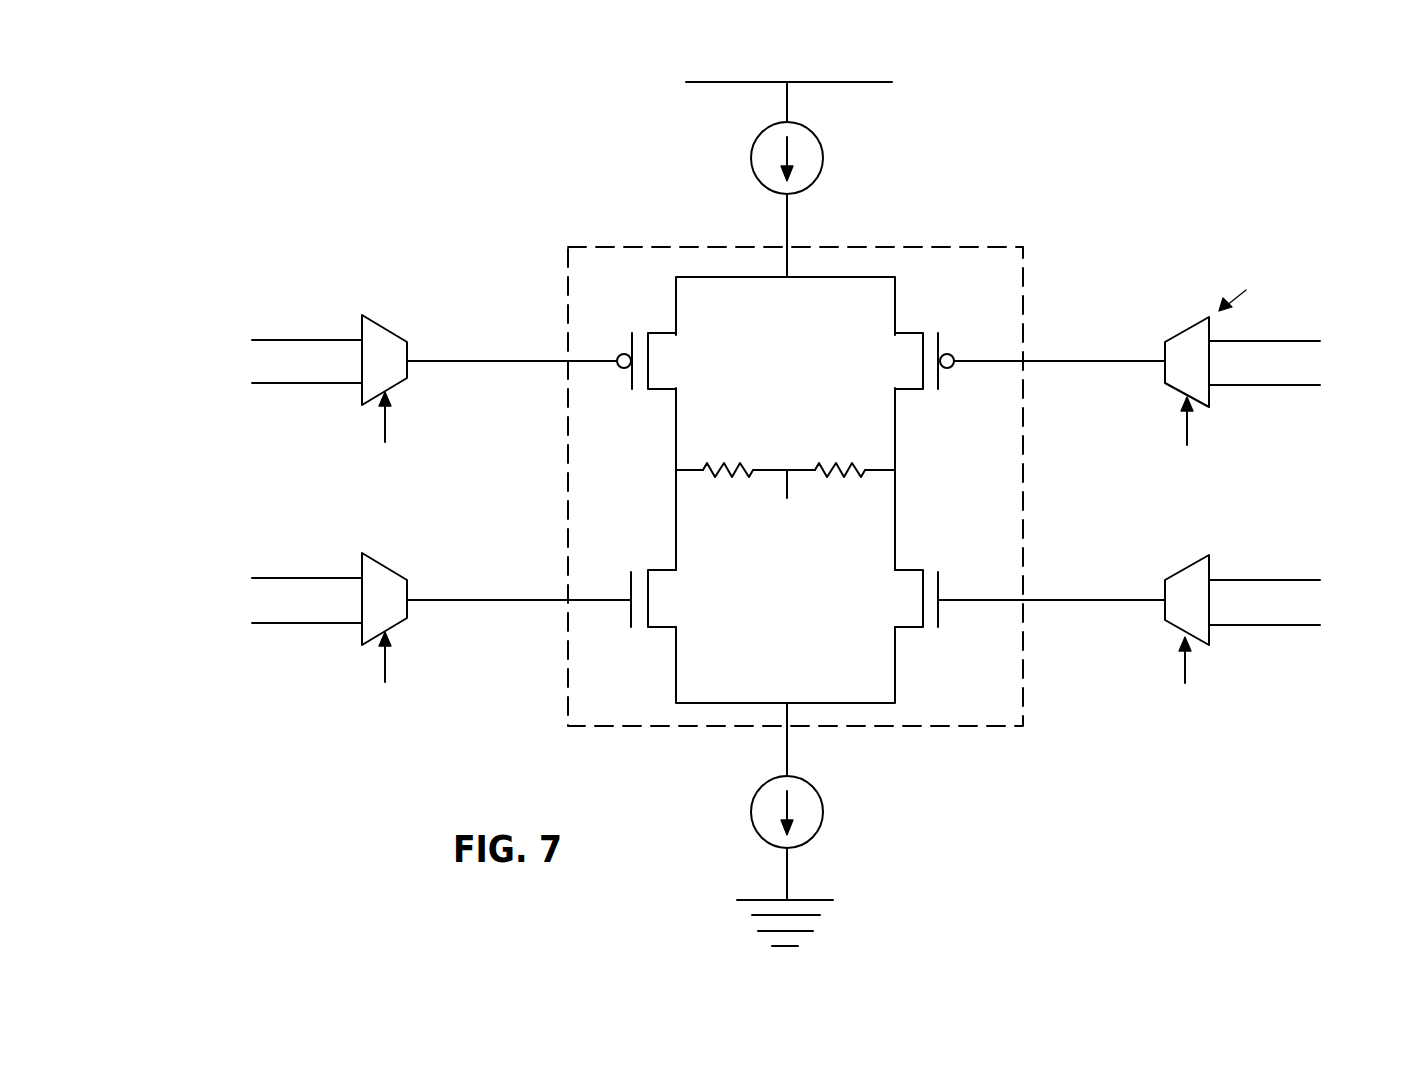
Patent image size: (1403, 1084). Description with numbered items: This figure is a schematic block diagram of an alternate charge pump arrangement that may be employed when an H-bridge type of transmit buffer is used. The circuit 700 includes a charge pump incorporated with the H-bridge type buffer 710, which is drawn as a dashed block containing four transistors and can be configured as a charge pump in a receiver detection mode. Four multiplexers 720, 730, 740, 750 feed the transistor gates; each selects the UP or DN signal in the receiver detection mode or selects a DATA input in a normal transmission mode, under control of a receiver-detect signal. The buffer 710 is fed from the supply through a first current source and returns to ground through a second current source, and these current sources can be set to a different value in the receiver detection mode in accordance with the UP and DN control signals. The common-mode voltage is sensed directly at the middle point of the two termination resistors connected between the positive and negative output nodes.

The circuit 700 is at (1094, 112).
The H-bridge type transmit buffer 710 is at (645, 247).
The multiplexer 720 is at (389, 327).
The multiplexer 730 is at (389, 560).
The multiplexer 740 is at (1181, 326).
The multiplexer 750 is at (1181, 564).